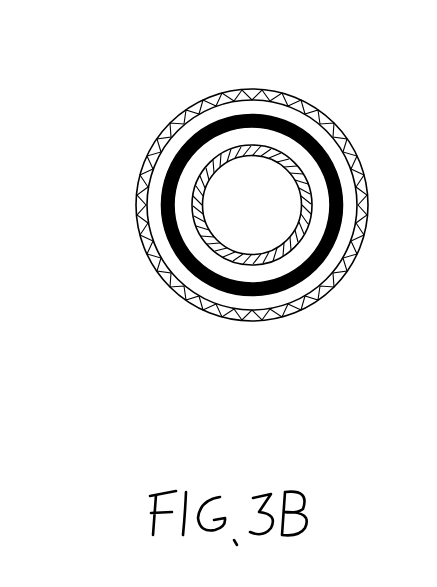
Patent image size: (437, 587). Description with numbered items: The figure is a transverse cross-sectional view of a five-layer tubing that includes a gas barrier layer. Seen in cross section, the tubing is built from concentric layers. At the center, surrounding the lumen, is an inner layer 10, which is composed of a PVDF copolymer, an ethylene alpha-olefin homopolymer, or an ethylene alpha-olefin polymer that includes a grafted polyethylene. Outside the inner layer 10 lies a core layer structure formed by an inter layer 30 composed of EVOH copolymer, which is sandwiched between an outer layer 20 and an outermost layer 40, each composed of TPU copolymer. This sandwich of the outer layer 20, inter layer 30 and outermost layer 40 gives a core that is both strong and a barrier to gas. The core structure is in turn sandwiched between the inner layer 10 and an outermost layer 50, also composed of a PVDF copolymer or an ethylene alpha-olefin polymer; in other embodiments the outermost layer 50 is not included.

The inner layer 10 is at (218, 153).
The outer layer 20 is at (182, 190).
The inter layer 30 is at (168, 243).
The outermost layer 40 is at (243, 303).
The outermost layer 50 is at (322, 298).